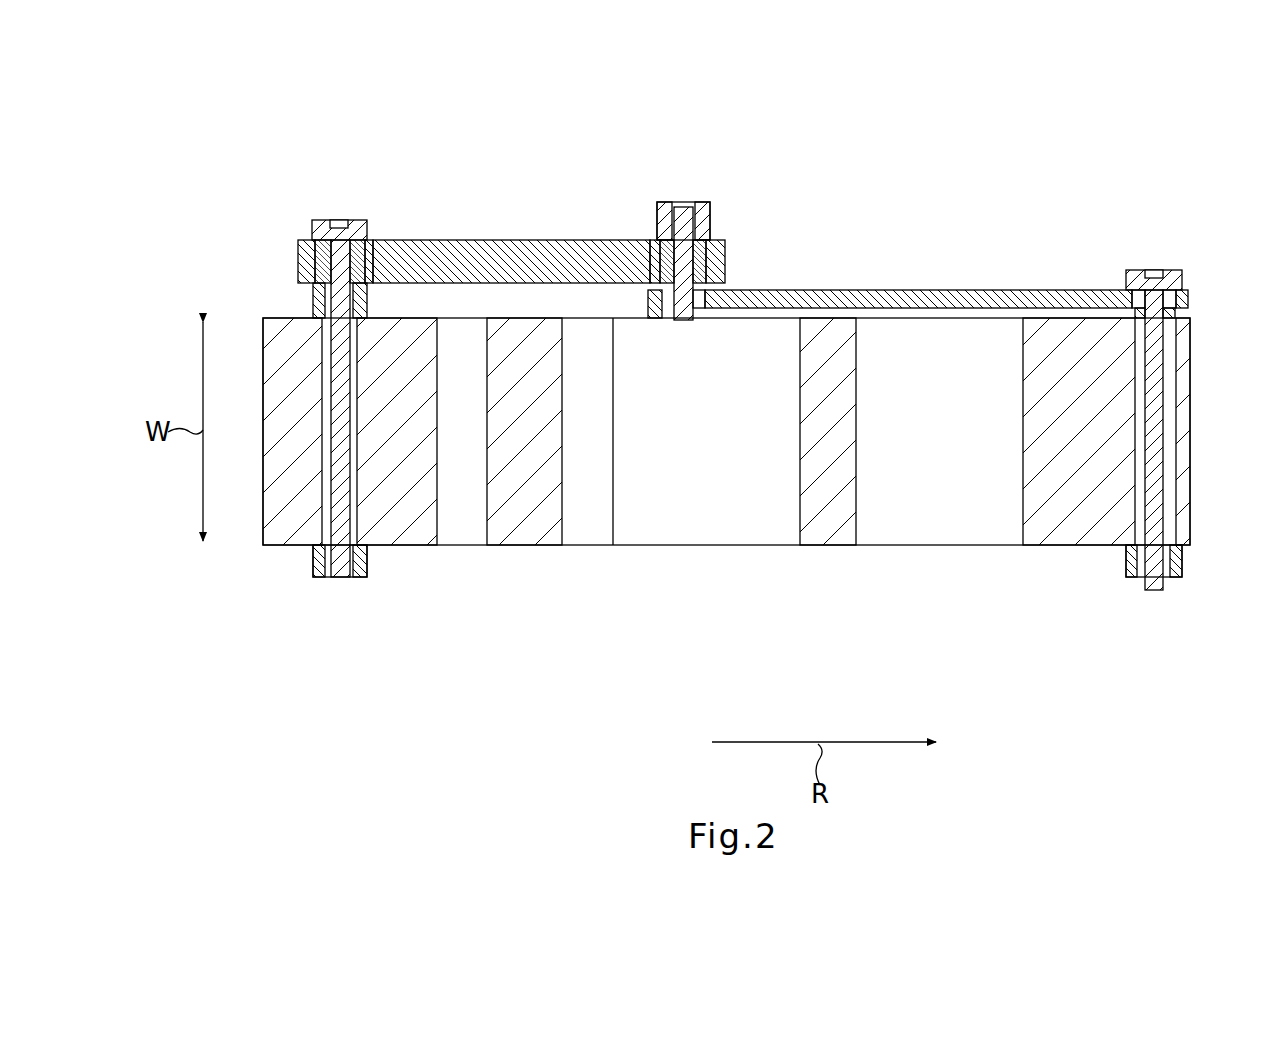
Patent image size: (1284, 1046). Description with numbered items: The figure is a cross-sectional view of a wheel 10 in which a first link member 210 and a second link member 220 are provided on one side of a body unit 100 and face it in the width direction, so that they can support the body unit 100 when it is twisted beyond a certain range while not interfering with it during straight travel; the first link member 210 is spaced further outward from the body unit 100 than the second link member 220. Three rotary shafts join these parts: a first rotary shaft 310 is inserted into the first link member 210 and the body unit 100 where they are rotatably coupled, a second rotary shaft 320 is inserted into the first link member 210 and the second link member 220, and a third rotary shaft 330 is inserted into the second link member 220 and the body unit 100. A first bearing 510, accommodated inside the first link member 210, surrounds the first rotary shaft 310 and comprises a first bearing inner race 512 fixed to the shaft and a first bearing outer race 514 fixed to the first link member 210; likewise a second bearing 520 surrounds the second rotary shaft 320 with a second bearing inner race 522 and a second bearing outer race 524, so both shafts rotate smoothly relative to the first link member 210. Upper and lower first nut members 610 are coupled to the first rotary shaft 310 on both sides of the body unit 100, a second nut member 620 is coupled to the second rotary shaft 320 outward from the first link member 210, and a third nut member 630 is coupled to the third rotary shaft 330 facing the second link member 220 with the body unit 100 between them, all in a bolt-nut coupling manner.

The wheel 10 is at (411, 124).
The body unit 100 is at (711, 487).
The first link member 210 is at (446, 240).
The second link member 220 is at (1050, 290).
The first rotary shaft 310 is at (342, 572).
The second rotary shaft 320 is at (683, 206).
The third rotary shaft 330 is at (1152, 270).
The first bearing 510 is at (275, 232).
The first bearing inner race 512 is at (316, 243).
The first bearing outer race 514 is at (306, 262).
The second bearing 520 is at (622, 232).
The second bearing inner race 522 is at (664, 244).
The second bearing outer race 524 is at (652, 262).
The first nut members 610 is at (317, 302).
The second nut member 620 is at (705, 214).
The third nut member 630 is at (1180, 563).